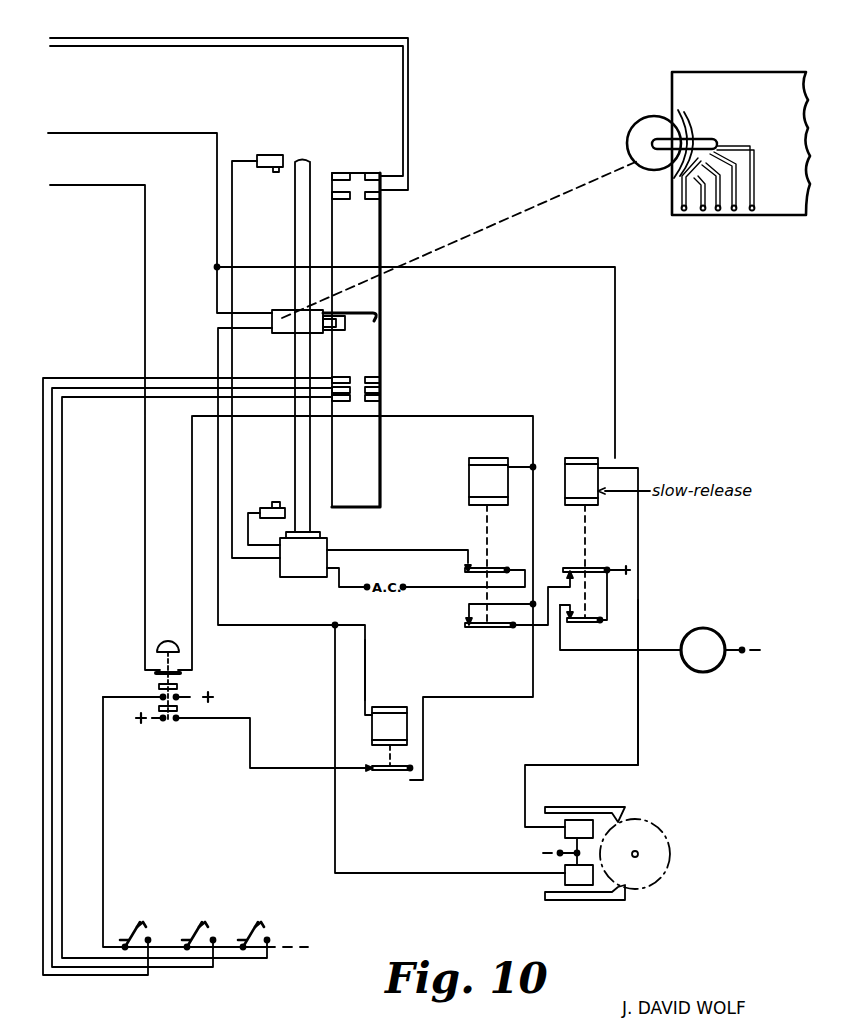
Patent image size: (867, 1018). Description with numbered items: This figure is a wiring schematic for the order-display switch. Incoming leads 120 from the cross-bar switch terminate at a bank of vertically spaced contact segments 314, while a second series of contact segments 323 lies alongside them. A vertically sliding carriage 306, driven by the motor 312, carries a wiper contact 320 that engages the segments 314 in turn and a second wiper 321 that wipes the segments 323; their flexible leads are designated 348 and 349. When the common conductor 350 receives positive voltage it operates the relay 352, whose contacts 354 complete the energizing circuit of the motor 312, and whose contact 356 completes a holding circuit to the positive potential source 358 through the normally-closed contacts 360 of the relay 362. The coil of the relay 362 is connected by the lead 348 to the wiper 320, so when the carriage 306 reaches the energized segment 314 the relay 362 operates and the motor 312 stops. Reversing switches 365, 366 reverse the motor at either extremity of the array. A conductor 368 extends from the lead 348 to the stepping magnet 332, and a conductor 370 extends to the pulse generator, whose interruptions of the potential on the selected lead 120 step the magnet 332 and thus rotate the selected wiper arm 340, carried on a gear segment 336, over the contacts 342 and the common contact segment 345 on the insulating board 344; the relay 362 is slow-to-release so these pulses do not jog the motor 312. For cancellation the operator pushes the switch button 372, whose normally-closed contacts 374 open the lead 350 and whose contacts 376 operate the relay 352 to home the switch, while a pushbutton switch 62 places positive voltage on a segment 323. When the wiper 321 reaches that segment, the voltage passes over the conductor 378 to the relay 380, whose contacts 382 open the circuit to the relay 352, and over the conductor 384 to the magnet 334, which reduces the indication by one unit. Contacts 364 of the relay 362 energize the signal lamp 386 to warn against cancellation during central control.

The conductor 120 is at (126, 16).
The conductor 370 is at (187, 120).
The common conductor 350 is at (83, 165).
The conductor lead 348 is at (217, 297).
The conductor lead 349 is at (247, 329).
The contact segments 314 is at (375, 173).
The contact segments 323 is at (339, 172).
The motor 312 is at (318, 569).
The carriage 306 is at (280, 310).
The second wiper 321 is at (342, 328).
The wiper contact 320 is at (376, 318).
The reversing switch 365 is at (270, 155).
The reversing switch 366 is at (267, 507).
The contacts 354 is at (462, 562).
The contact 356 is at (464, 619).
The relay 352 is at (495, 450).
The relay 362 is at (589, 457).
The normally-closed contacts 360 is at (553, 577).
The positive potential source 358 is at (622, 560).
The contacts 364 is at (590, 628).
The signal lamp 386 is at (730, 618).
The conductor 368 is at (638, 697).
The switch button 372 is at (173, 641).
The normally-closed contacts 374 is at (181, 670).
The contacts 376 is at (178, 720).
The conductor 378 is at (366, 654).
The relay 380 is at (385, 712).
The contacts 382 is at (402, 779).
The conductor 384 is at (458, 858).
The stepping magnet 332 is at (565, 829).
The magnet 334 is at (584, 890).
The pushbutton switches 62 is at (250, 922).
The insulating board 344 is at (790, 97).
The gear segments 336 is at (638, 131).
The contact wiper arm 340 is at (668, 119).
The common contact segment 345 is at (690, 112).
The contacts 342 is at (738, 147).